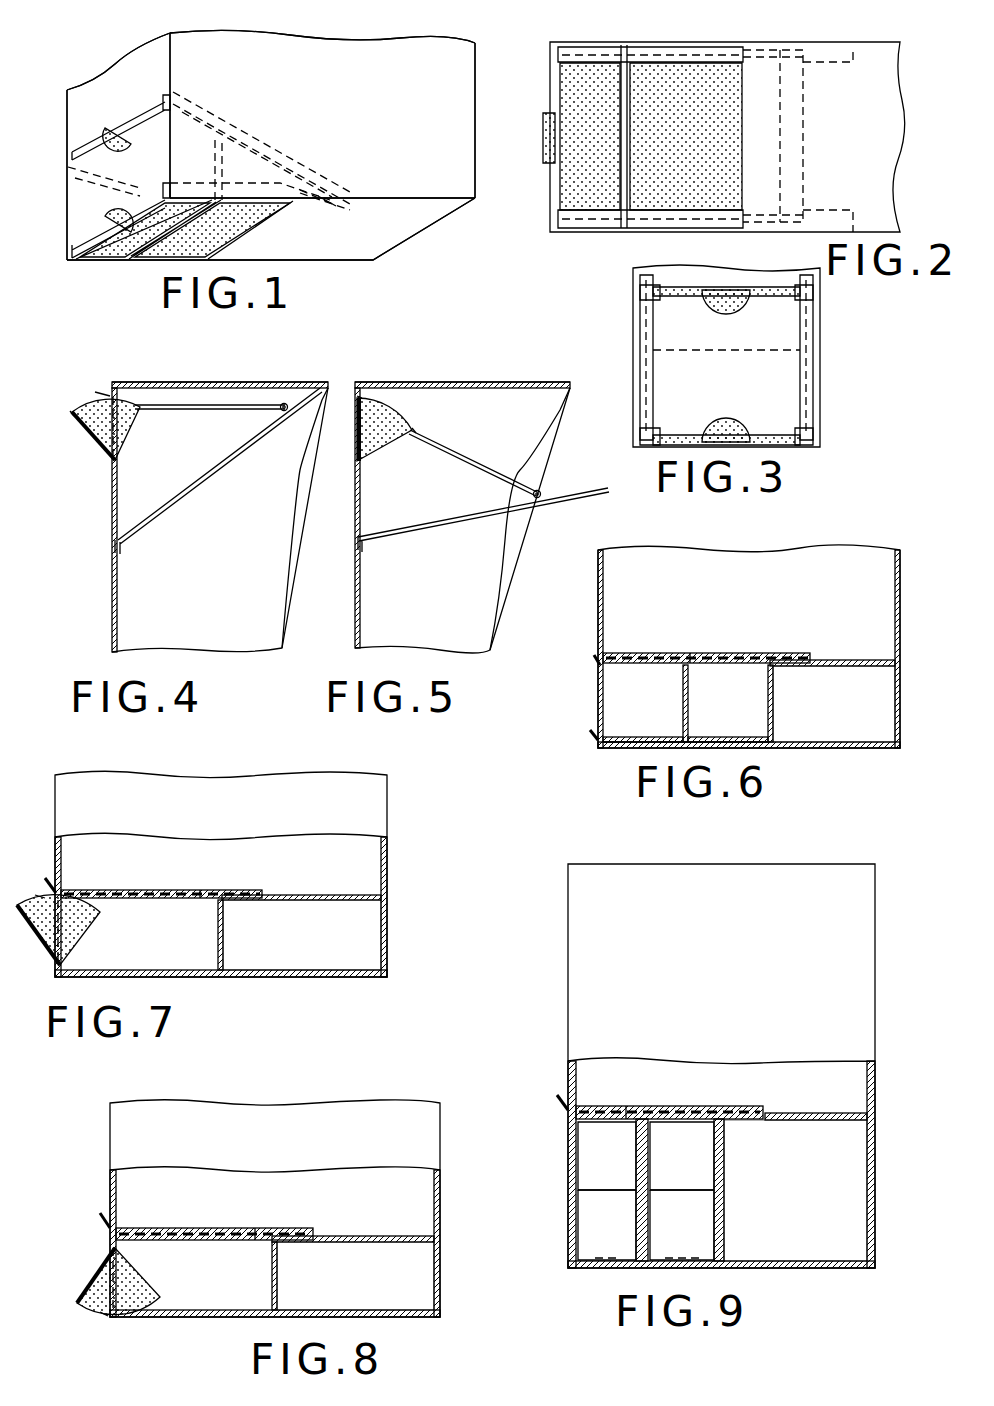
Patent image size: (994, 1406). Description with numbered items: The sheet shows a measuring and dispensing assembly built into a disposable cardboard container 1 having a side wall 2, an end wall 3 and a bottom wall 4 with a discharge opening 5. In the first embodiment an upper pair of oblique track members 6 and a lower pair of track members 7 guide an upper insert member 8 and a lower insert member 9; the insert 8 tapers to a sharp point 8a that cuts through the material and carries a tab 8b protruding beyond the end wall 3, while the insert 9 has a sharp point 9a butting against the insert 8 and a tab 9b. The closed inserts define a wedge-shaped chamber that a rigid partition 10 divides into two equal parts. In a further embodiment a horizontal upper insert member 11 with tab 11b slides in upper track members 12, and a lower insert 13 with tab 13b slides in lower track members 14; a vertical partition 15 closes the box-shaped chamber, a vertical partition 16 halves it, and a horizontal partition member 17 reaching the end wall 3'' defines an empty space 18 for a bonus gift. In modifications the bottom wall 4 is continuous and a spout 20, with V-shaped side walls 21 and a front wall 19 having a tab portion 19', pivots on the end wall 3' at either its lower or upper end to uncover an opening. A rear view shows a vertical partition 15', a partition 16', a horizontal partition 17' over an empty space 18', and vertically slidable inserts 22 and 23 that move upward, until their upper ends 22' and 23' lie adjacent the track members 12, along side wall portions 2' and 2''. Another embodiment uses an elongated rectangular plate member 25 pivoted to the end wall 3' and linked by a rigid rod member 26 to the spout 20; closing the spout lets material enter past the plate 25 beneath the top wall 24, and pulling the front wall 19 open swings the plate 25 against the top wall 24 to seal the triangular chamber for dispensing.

In FIG. 1, the container 1 is at (134, 32).
In FIG. 2, the container 1 is at (727, 137).
In FIG. 3, the container 1 is at (726, 356).
In FIG. 4, the container 1 is at (266, 371).
In FIG. 5, the container 1 is at (500, 371).
In FIG. 6, the container 1 is at (836, 544).
In FIG. 7, the container 1 is at (336, 767).
In FIG. 8, the container 1 is at (373, 1087).
In FIG. 9, the container 1 is at (820, 857).
In FIG. 1, the side wall 2 is at (322, 106).
In FIG. 9, the side wall portion 2' is at (584, 1156).
In FIG. 9, the side wall portion 2'' is at (715, 1156).
In FIG. 1, the end wall 3 is at (117, 146).
In FIG. 2, the end wall 3 is at (634, 134).
In FIG. 3, the end wall 3 is at (746, 357).
In FIG. 4, the end wall 3' is at (196, 520).
In FIG. 5, the end wall 3' is at (442, 519).
In FIG. 6, the end wall 3' is at (576, 649).
In FIG. 7, the end wall 3' is at (40, 870).
In FIG. 8, the end wall 3' is at (88, 1210).
In FIG. 9, the end wall 3' is at (543, 1110).
In FIG. 6, the end wall 3'' is at (909, 630).
In FIG. 7, the end wall 3'' is at (412, 887).
In FIG. 8, the end wall 3'' is at (461, 1226).
In FIG. 9, the end wall 3'' is at (900, 1113).
In FIG. 1, the bottom wall 4 is at (330, 240).
In FIG. 6, the bottom wall 4 is at (845, 750).
In FIG. 7, the bottom wall 4 is at (300, 977).
In FIG. 8, the bottom wall 4 is at (210, 1318).
In FIG. 1, the discharge opening 5 is at (149, 270).
In FIG. 6, the discharge opening 5 is at (625, 760).
In FIG. 1, the upper track members 6 is at (188, 92).
In FIG. 3, the upper track members 6 is at (815, 285).
In FIG. 1, the lower track members 7 is at (290, 185).
In FIG. 2, the lower track members 7 is at (760, 50).
In FIG. 3, the lower track members 7 is at (818, 437).
In FIG. 1, the upper insert member 8 is at (150, 125).
In FIG. 1, the sharp point 8a is at (335, 202).
In FIG. 1, the tab 8b is at (112, 133).
In FIG. 3, the tab 8b is at (722, 300).
In FIG. 1, the lower insert member 9 is at (118, 248).
In FIG. 2, the lower insert member 9 is at (665, 80).
In FIG. 1, the sharp point 9a is at (325, 195).
In FIG. 1, the tab 9b is at (112, 220).
In FIG. 3, the tab 9b is at (732, 438).
In FIG. 1, the rigid partition 10 is at (222, 160).
In FIG. 6, the upper insert member 11 is at (638, 653).
In FIG. 7, the upper insert member 11 is at (142, 890).
In FIG. 8, the upper insert member 11 is at (180, 1232).
In FIG. 9, the upper insert member 11 is at (682, 1106).
In FIG. 6, the tab 11b is at (594, 668).
In FIG. 7, the tab 11b is at (62, 880).
In FIG. 8, the tab 11b is at (100, 1225).
In FIG. 9, the tab 11b is at (560, 1105).
In FIG. 6, the upper track members 12 is at (690, 653).
In FIG. 7, the upper track members 12 is at (200, 890).
In FIG. 8, the upper track members 12 is at (255, 1232).
In FIG. 9, the upper track members 12 is at (624, 1106).
In FIG. 6, the lower insert 13 is at (632, 740).
In FIG. 6, the tab 13b is at (590, 735).
In FIG. 6, the lower track members 14 is at (730, 740).
In FIG. 6, the vertical partition 15 is at (798, 703).
In FIG. 7, the vertical partition 15 is at (254, 935).
In FIG. 8, the vertical partition 15 is at (307, 1276).
In FIG. 9, the vertical partition 15' is at (757, 1190).
In FIG. 6, the vertical partition 16 is at (715, 703).
In FIG. 9, the partition 16' is at (614, 1207).
In FIG. 6, the horizontal partition member 17 is at (832, 636).
In FIG. 7, the horizontal partition member 17 is at (301, 872).
In FIG. 8, the horizontal partition member 17 is at (353, 1213).
In FIG. 9, the horizontal partition 17' is at (816, 1094).
In FIG. 6, the empty space 18 is at (853, 704).
In FIG. 7, the empty space 18 is at (329, 935).
In FIG. 8, the empty space 18 is at (379, 1276).
In FIG. 9, the empty space 18' is at (824, 1190).
In FIG. 4, the front wall 19 is at (77, 436).
In FIG. 5, the front wall 19 is at (372, 400).
In FIG. 7, the front wall 19 is at (36, 945).
In FIG. 8, the front wall 19 is at (76, 1268).
In FIG. 4, the tab portion 19' is at (55, 375).
In FIG. 5, the tab portion 19' is at (377, 357).
In FIG. 4, the spout 20 is at (95, 385).
In FIG. 5, the spout 20 is at (432, 414).
In FIG. 7, the spout 20 is at (36, 887).
In FIG. 8, the spout 20 is at (99, 1320).
In FIG. 4, the side walls 21 is at (125, 430).
In FIG. 5, the side walls 21 is at (375, 440).
In FIG. 7, the side walls 21 is at (78, 930).
In FIG. 8, the side walls 21 is at (135, 1285).
In FIG. 9, the vertically slidable insert 22 is at (581, 1225).
In FIG. 9, the upper end 22' is at (581, 1207).
In FIG. 9, the vertically slidable insert 23 is at (713, 1225).
In FIG. 9, the upper end 23' is at (715, 1204).
In FIG. 4, the top wall 24 is at (292, 382).
In FIG. 5, the top wall 24 is at (450, 382).
In FIG. 4, the elongated rectangular plate member 25 is at (196, 485).
In FIG. 5, the elongated rectangular plate member 25 is at (500, 510).
In FIG. 4, the rigid rod member 26 is at (185, 406).
In FIG. 5, the rigid rod member 26 is at (465, 455).